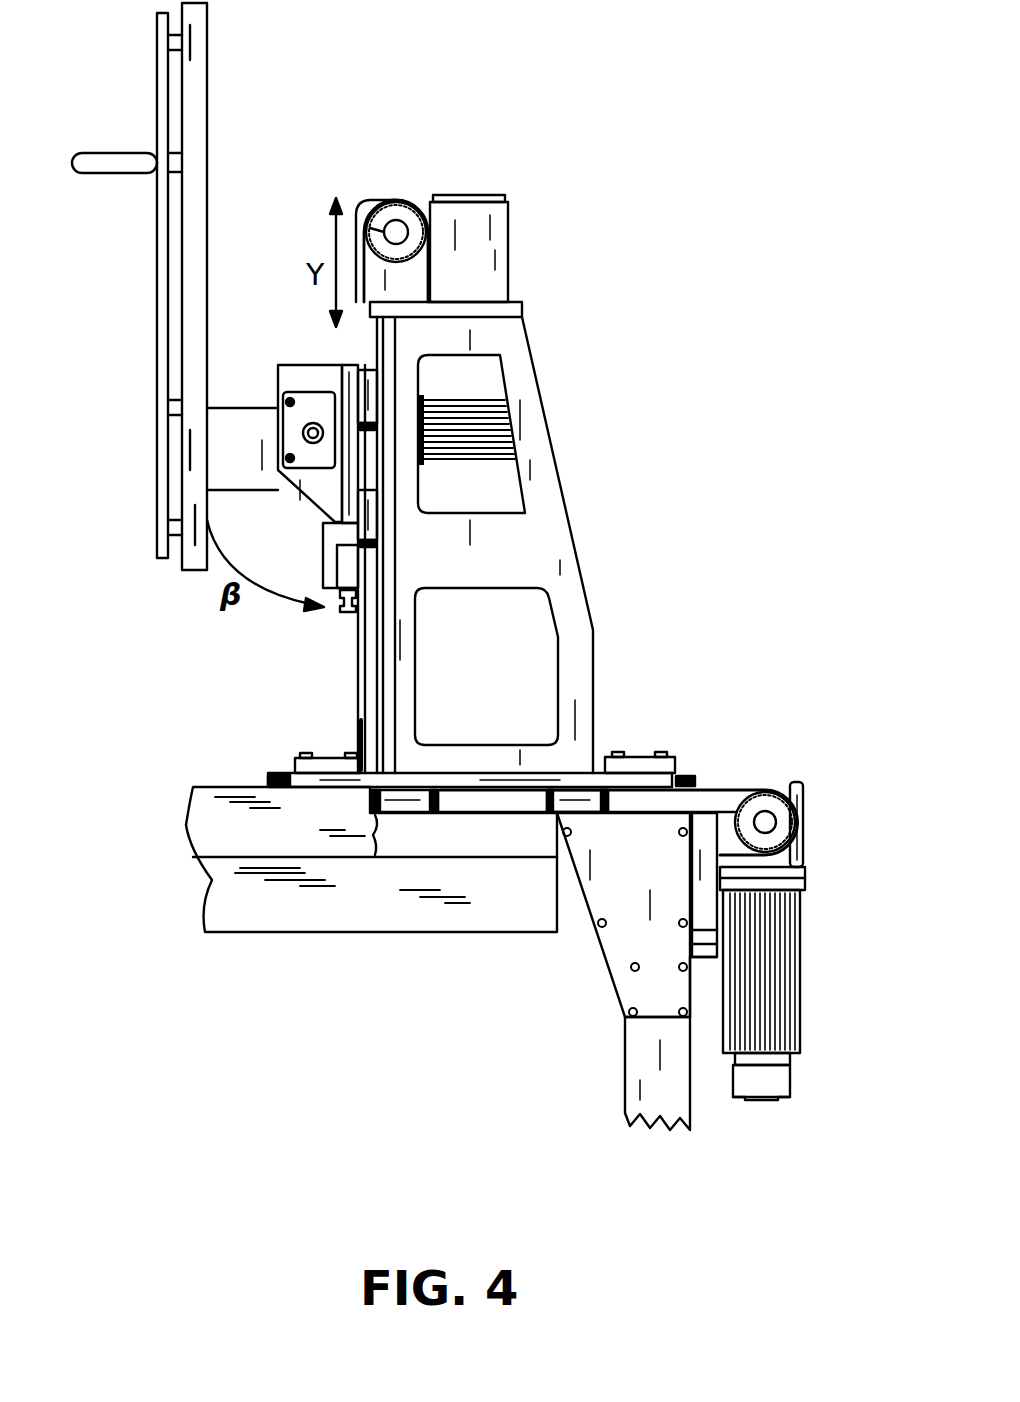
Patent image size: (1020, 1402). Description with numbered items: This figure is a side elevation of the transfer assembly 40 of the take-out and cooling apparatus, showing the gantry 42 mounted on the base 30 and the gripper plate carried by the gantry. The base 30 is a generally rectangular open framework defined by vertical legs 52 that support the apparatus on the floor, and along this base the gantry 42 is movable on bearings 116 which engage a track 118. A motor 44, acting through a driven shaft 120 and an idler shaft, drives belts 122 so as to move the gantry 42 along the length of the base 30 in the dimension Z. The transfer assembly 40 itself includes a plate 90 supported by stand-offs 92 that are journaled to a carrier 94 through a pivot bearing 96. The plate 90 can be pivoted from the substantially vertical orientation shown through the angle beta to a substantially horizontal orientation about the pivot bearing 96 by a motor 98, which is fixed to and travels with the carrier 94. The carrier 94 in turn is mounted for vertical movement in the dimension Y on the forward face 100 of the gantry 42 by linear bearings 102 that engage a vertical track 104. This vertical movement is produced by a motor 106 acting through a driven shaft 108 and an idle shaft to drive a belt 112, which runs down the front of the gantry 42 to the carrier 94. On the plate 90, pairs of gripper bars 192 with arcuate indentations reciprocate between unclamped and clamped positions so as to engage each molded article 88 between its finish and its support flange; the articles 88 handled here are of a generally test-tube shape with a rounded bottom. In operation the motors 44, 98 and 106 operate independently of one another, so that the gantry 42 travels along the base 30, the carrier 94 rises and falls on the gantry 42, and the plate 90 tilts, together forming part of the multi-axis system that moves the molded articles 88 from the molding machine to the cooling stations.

The base 30 is at (290, 915).
The transfer assembly 40 is at (193, 266).
The gantry 42 is at (550, 537).
The motor 44 is at (787, 1023).
The vertical legs 52 is at (673, 1083).
The molded article 88 is at (107, 162).
The plate 90 is at (192, 187).
The stand-offs 92 is at (240, 480).
The carrier 94 is at (345, 520).
The pivot bearing 96 is at (303, 433).
The motor 98 is at (480, 412).
The forward face 100 is at (380, 665).
The linear bearings 102 is at (368, 388).
The vertical track 104 is at (373, 648).
The motor 106 is at (452, 197).
The driven shaft 108 is at (358, 206).
The belt 112 is at (472, 268).
The bearings 116 is at (597, 782).
The track 118 is at (687, 806).
The driven shaft 120 is at (780, 817).
The belts 122 is at (758, 797).
The gripper bars 192 is at (155, 278).